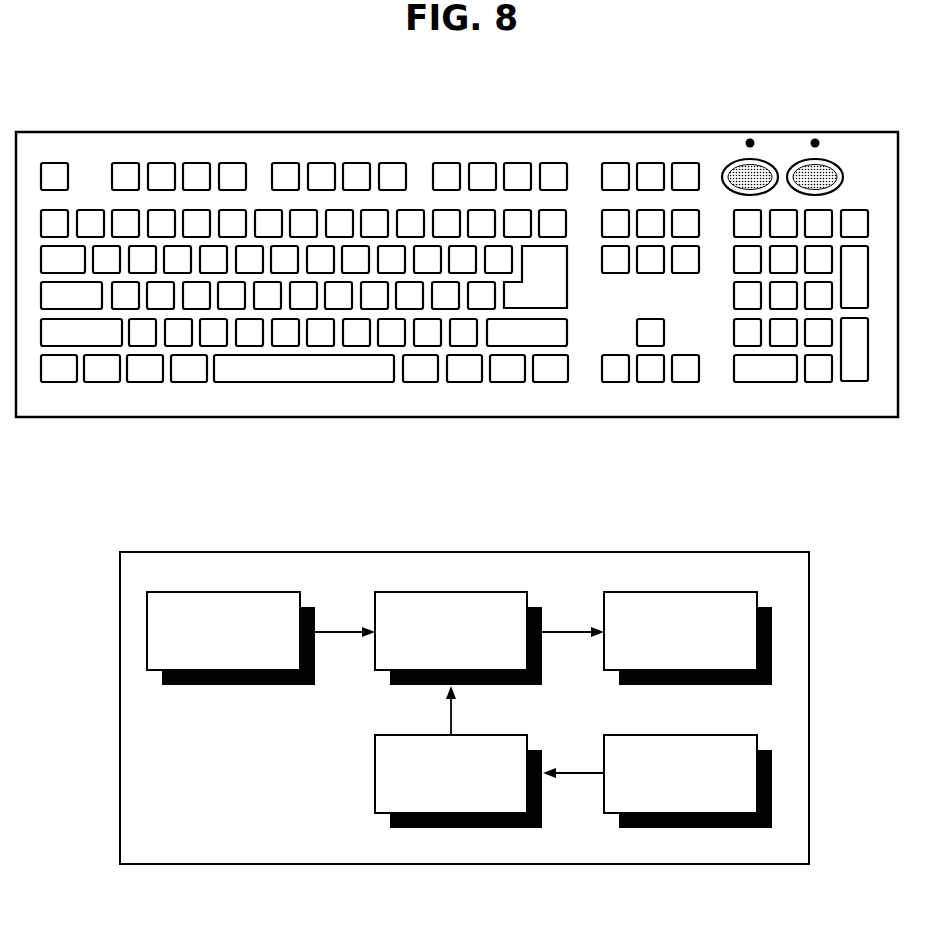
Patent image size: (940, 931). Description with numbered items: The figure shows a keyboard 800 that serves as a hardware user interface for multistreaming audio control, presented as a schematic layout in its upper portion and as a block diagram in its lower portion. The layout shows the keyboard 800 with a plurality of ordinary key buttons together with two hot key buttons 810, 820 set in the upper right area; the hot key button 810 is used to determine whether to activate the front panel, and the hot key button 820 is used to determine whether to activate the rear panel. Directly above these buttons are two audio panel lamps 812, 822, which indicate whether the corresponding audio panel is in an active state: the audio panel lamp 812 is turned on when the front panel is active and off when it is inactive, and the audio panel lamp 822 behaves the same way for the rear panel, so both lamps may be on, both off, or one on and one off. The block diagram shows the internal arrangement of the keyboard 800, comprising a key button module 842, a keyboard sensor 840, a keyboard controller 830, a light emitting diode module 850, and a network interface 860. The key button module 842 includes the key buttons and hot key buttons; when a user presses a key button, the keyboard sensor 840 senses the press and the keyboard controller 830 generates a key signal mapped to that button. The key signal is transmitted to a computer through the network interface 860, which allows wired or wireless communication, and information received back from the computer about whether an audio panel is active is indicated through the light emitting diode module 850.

The keyboard 800 is at (487, 131).
The hot key button 810 is at (761, 165).
The audio panel lamp 812 is at (750, 139).
The hot key button 820 is at (831, 162).
The audio panel lamp 822 is at (815, 139).
The keyboard controller 830 is at (458, 638).
The keyboard sensor 840 is at (458, 781).
The key button module 842 is at (688, 781).
The light emitting diode (LED) 850 is at (688, 638).
The network interface 860 is at (231, 638).